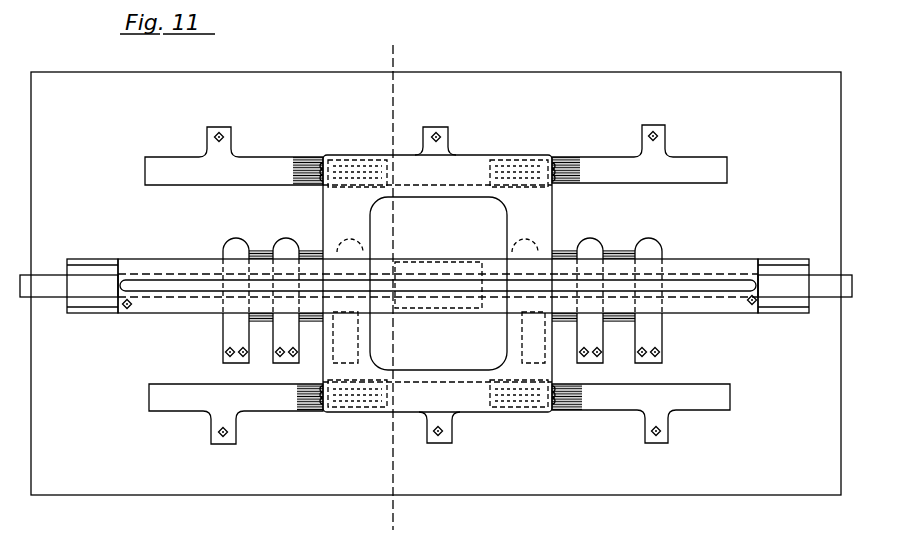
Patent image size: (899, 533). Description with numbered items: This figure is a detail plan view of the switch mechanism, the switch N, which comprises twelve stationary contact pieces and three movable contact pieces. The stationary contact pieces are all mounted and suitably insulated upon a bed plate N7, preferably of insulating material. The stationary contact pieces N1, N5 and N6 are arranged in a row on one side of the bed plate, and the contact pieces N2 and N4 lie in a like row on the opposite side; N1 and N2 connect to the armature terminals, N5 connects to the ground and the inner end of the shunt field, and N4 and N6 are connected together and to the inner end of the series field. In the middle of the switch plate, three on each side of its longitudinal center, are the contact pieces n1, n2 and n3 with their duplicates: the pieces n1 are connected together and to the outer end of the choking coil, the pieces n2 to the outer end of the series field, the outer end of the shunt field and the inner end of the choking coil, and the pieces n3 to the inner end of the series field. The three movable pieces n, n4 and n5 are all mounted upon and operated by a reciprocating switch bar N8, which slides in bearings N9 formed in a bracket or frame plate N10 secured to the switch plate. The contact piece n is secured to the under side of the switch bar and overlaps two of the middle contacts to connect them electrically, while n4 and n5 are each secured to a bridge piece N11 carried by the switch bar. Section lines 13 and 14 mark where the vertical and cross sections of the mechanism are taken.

The switch N is at (207, 318).
The stationary contact piece N1 is at (420, 428).
The stationary contact piece N2 is at (450, 144).
The stationary contact piece N4 is at (193, 179).
The stationary contact piece N5 is at (198, 423).
The stationary contact piece N6 is at (601, 417).
The bed plate N7 is at (340, 413).
The switch bar N8 is at (115, 236).
The bearings N9 is at (615, 143).
The frame plate N10 is at (718, 245).
The bridge piece N11 is at (354, 244).
The movable contact piece n is at (455, 302).
The contact piece n1 is at (360, 250).
The contact piece n2 is at (286, 240).
The contact piece n3 is at (236, 238).
The movable contact piece n4 is at (351, 156).
The movable contact piece n5 is at (376, 413).
The section line 13 is at (436, 293).
The section line 14 is at (388, 530).